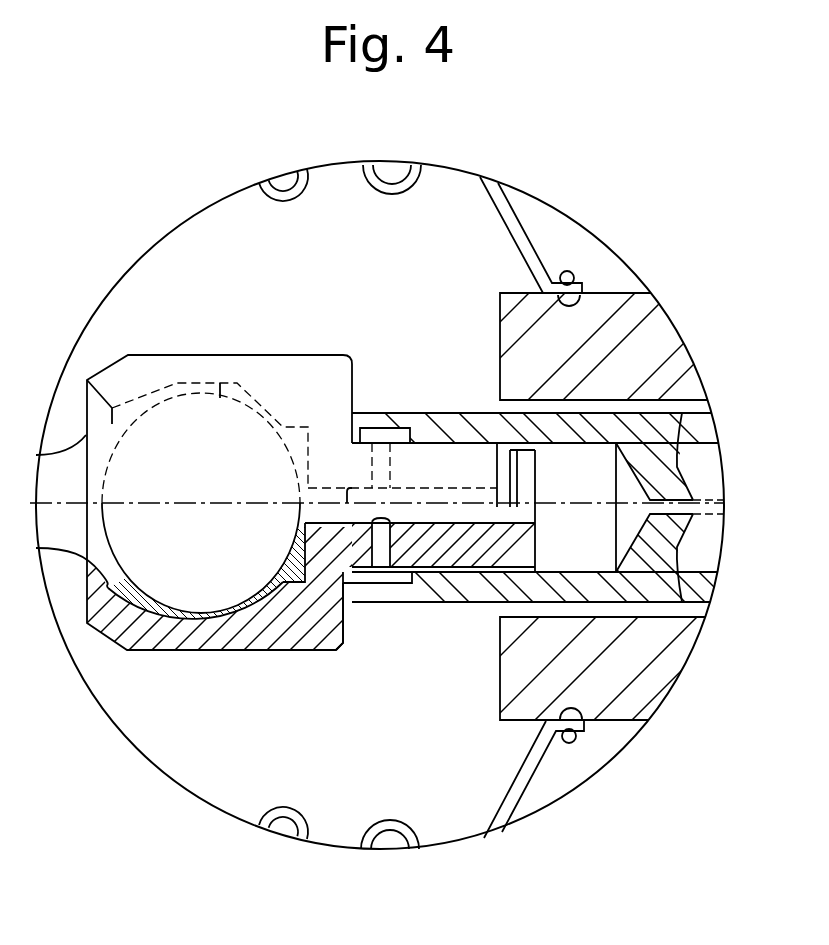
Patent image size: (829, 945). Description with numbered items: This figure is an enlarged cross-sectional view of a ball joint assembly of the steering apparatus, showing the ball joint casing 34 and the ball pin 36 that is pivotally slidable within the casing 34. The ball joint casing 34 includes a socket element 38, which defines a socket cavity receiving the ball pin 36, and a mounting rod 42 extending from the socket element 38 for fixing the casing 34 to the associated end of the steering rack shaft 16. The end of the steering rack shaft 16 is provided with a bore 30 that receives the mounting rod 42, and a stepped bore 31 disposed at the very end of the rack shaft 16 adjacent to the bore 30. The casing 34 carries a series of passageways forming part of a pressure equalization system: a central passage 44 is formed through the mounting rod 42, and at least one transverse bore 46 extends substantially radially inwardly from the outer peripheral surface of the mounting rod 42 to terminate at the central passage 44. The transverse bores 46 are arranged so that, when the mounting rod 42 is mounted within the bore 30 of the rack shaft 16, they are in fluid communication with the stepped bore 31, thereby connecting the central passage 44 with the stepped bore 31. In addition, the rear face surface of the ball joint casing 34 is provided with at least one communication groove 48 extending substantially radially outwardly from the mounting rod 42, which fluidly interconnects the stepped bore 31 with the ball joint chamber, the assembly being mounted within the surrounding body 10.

The gauge body 10 is at (633, 350).
The steering rack shaft 16 is at (665, 484).
The bore 30 is at (568, 445).
The stepped bore 31 is at (402, 427).
The ball joint casing 34 is at (280, 655).
The ball pin 36 is at (198, 567).
The socket element 38 is at (253, 355).
The mounting rod 42 is at (448, 460).
The central passage 44 is at (522, 515).
The transverse bore 46 is at (392, 588).
The communication groove 48 is at (350, 628).